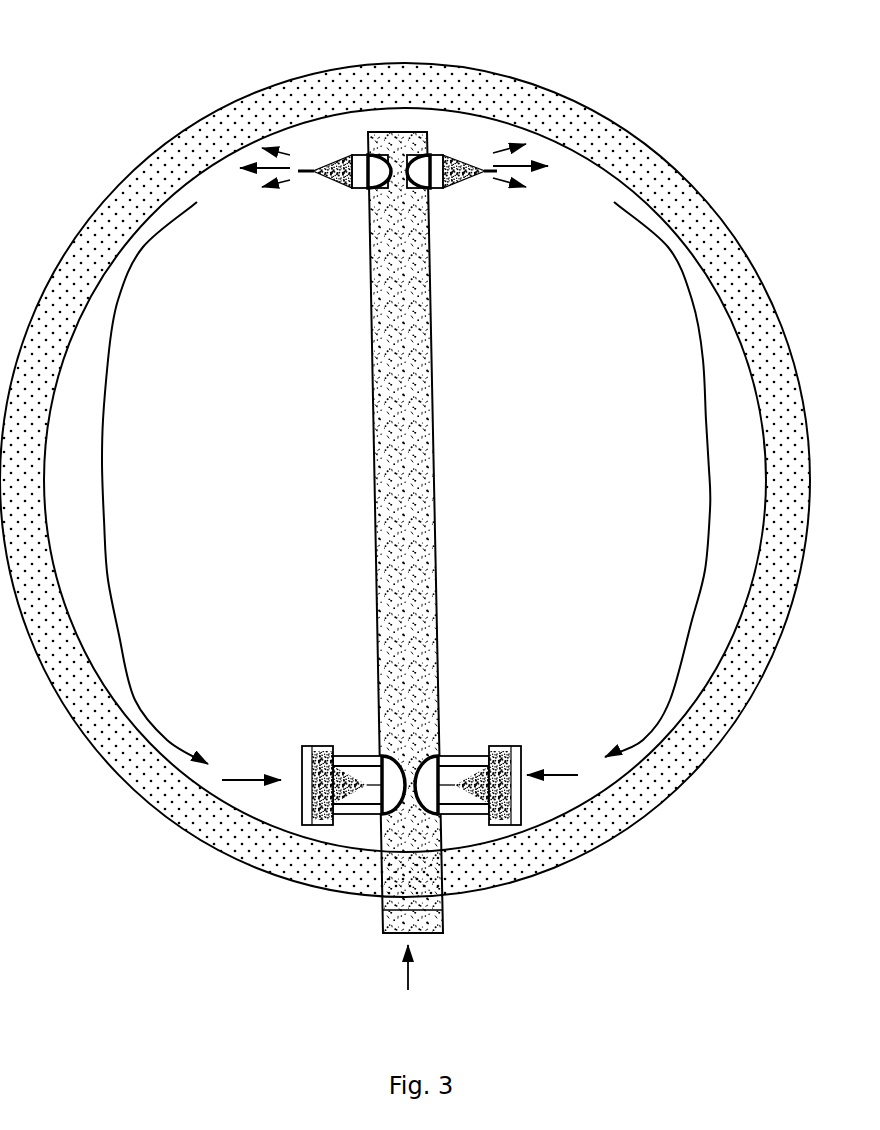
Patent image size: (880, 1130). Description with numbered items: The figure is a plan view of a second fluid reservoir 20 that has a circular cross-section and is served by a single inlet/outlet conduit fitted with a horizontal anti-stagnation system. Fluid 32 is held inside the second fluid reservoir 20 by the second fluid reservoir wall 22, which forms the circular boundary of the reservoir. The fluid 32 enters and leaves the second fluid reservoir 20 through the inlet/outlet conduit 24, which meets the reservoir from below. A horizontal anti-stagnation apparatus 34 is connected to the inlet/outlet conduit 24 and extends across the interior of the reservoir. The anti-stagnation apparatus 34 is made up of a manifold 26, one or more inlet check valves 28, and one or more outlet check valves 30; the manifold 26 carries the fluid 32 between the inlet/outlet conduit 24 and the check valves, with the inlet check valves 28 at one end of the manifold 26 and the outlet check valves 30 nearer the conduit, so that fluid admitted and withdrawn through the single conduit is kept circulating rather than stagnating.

The second fluid reservoir 20 is at (160, 70).
The second fluid reservoir wall 22 is at (63, 285).
The inlet/outlet conduit 24 is at (410, 980).
The manifold 26 is at (386, 372).
The inlet check valves 28 is at (425, 165).
The outlet check valves 30 is at (337, 793).
The fluid 32 is at (205, 514).
The horizontal anti-stagnation apparatus 34 is at (338, 406).